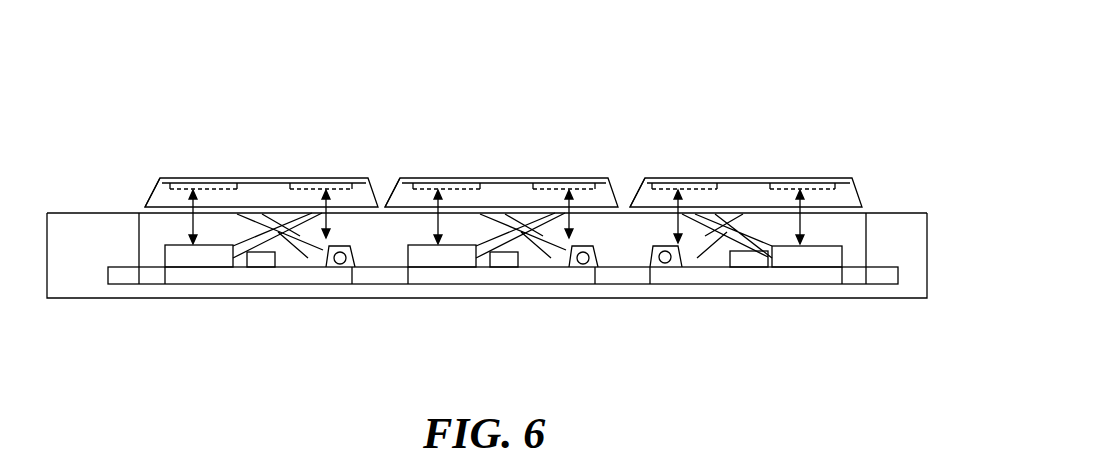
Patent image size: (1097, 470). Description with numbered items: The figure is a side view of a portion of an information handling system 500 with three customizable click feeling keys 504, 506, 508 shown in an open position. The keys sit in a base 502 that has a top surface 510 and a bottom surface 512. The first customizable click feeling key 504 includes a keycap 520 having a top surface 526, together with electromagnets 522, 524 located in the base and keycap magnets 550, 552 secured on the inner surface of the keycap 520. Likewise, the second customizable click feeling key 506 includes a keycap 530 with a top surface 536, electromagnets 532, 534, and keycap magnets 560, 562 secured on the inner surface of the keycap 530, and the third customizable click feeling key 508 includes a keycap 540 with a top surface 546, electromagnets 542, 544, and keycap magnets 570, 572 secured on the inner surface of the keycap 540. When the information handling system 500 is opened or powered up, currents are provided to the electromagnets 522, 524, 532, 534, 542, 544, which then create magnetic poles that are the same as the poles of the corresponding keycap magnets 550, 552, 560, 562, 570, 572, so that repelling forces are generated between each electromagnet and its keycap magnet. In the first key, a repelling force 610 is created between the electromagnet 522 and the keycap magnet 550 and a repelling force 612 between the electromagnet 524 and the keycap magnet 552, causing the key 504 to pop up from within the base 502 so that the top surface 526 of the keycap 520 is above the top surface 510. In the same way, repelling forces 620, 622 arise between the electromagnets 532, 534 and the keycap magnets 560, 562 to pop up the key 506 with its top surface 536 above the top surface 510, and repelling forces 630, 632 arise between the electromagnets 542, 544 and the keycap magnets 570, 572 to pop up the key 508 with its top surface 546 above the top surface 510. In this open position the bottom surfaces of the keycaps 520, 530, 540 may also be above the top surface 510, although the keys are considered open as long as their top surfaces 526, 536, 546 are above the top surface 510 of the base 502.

The information handling system 500 is at (700, 52).
The base 502 is at (878, 227).
The customizable click feeling key 504 is at (274, 137).
The customizable click feeling key 506 is at (510, 130).
The customizable click feeling key 508 is at (760, 130).
The top surface 510 is at (113, 212).
The bottom surface 512 is at (887, 284).
The keycap 520 is at (272, 183).
The electromagnet 522 is at (213, 258).
The electromagnet 524 is at (300, 258).
The top surface 526 is at (167, 178).
The keycap 530 is at (497, 185).
The electromagnet 532 is at (468, 257).
The electromagnet 534 is at (543, 258).
The top surface 536 is at (400, 178).
The keycap 540 is at (735, 188).
The electromagnet 542 is at (782, 253).
The electromagnet 544 is at (700, 258).
The top surface 546 is at (645, 178).
The keycap magnet 550 is at (187, 178).
The keycap magnet 552 is at (332, 180).
The keycap magnet 560 is at (440, 178).
The keycap magnet 562 is at (579, 178).
The keycap magnet 570 is at (833, 179).
The keycap magnet 572 is at (680, 178).
The repelling force 610 is at (190, 220).
The repelling force 612 is at (303, 233).
The repelling force 620 is at (437, 215).
The repelling force 622 is at (547, 233).
The repelling force 630 is at (775, 238).
The repelling force 632 is at (680, 215).